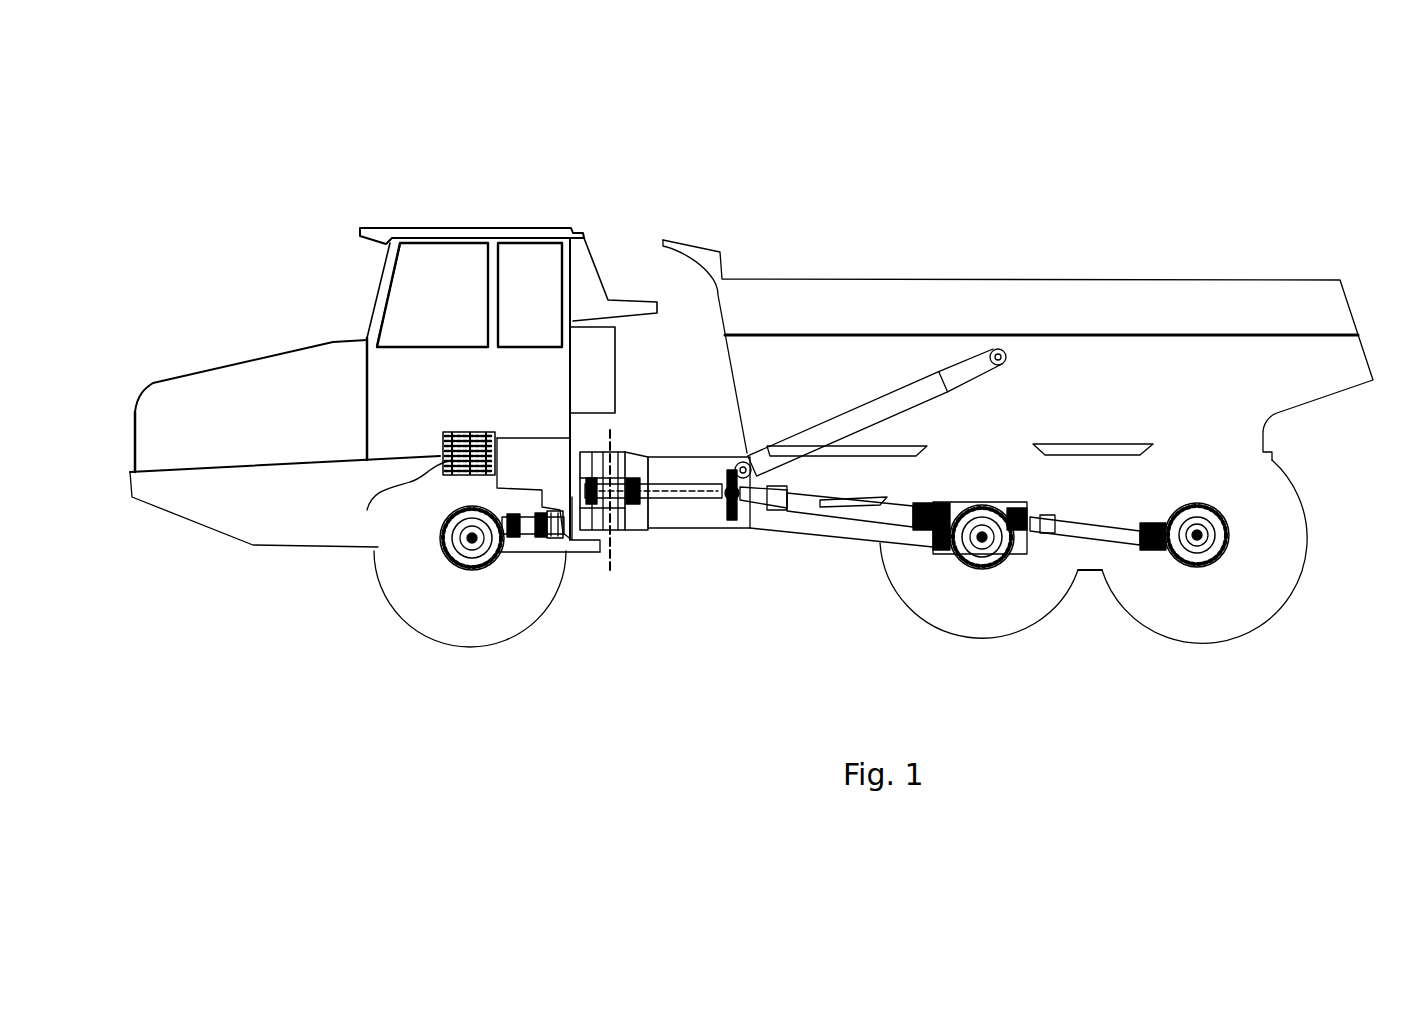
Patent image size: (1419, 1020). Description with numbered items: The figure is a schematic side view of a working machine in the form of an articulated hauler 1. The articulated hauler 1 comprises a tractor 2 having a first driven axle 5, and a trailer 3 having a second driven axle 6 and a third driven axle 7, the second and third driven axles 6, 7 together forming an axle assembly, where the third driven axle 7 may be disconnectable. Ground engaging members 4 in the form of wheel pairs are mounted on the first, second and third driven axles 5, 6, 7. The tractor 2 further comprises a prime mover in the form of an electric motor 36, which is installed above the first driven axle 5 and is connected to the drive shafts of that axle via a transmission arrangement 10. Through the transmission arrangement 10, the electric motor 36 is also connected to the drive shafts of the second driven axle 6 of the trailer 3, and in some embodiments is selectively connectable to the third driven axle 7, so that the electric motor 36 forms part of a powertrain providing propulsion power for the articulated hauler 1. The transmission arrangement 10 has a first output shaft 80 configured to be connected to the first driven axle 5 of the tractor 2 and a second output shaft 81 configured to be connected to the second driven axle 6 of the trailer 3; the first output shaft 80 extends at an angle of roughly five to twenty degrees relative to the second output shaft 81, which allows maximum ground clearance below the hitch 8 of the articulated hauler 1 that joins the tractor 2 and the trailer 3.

The articulated hauler 1 is at (257, 234).
The tractor 2 is at (344, 358).
The trailer 3 is at (773, 293).
The ground engaging members 4 is at (390, 590).
The first driven axle 5 is at (472, 545).
The second driven axle 6 is at (983, 545).
The third driven axle 7 is at (1197, 545).
The hitch 8 is at (630, 550).
The transmission arrangement 10 is at (572, 550).
The electric motor 36 is at (413, 477).
The first output shaft 80 is at (530, 550).
The second output shaft 81 is at (685, 503).